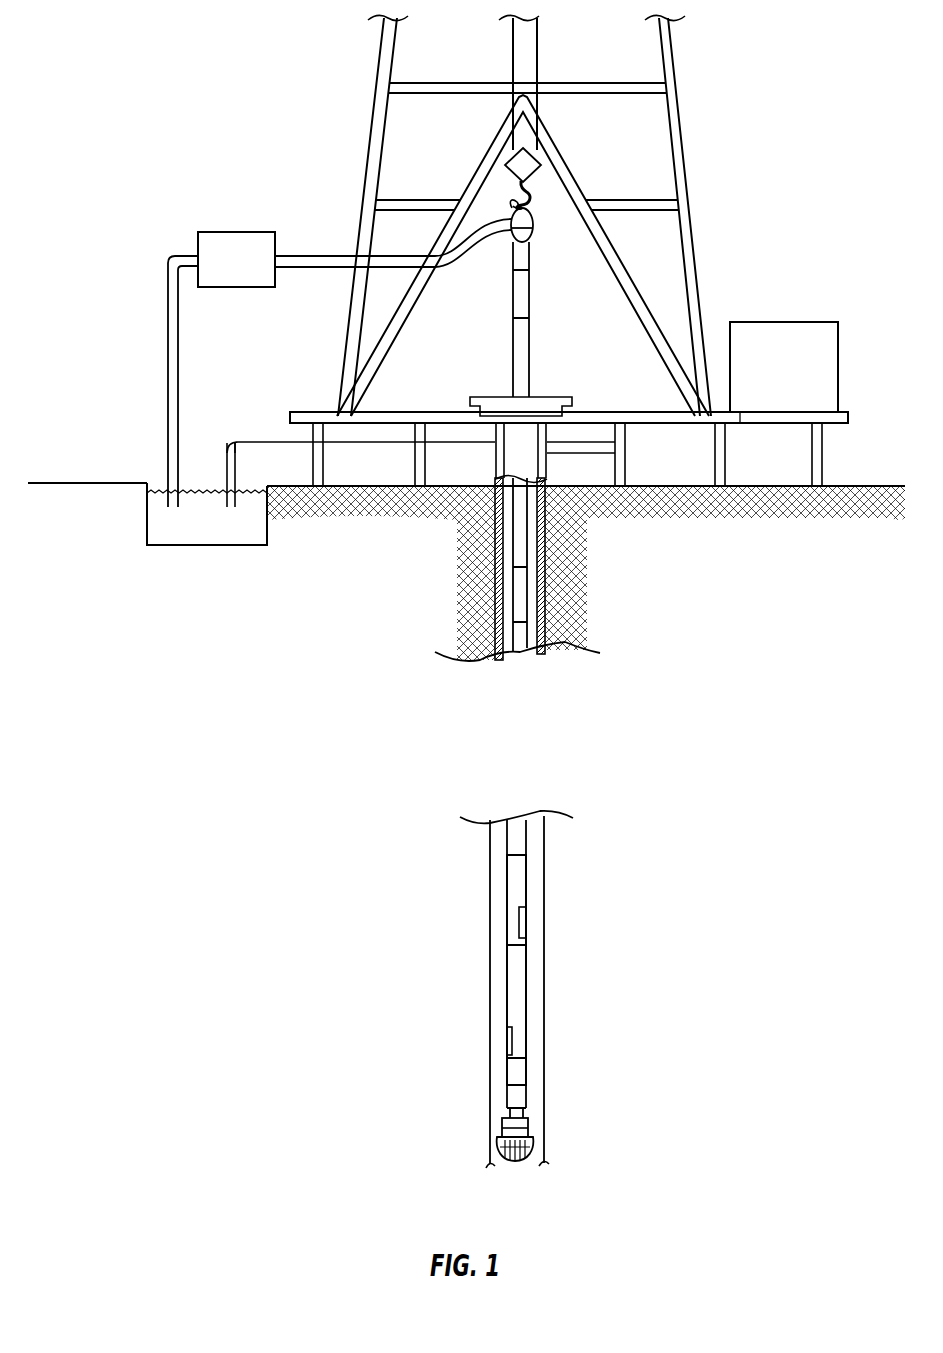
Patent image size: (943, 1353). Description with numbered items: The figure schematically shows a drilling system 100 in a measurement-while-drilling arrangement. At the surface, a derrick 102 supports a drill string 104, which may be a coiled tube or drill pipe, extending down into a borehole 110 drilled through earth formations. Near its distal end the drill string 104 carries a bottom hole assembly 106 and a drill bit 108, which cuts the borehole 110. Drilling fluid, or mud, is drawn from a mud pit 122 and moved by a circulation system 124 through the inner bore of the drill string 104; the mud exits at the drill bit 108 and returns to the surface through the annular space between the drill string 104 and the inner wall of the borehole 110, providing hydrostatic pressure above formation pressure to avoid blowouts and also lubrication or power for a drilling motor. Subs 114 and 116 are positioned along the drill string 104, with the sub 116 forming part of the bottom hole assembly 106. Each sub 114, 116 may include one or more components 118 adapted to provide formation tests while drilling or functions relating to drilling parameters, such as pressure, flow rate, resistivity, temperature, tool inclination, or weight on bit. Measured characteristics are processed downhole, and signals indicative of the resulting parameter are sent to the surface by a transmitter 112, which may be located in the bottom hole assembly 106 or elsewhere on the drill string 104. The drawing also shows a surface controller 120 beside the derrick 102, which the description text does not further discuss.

The drilling system 100 is at (220, 763).
The derrick 102 is at (679, 148).
The drill string 104 is at (532, 592).
The bottom hole assembly 106 is at (530, 1059).
The drill bit 108 is at (531, 1145).
The borehole 110 is at (503, 616).
The transmitter 112 is at (513, 1076).
The sub 114 is at (511, 891).
The sub 116 is at (511, 972).
The component 118 is at (524, 923).
The surface controller 120 is at (786, 322).
The mud pit 122 is at (160, 543).
The circulation system 124 is at (194, 211).